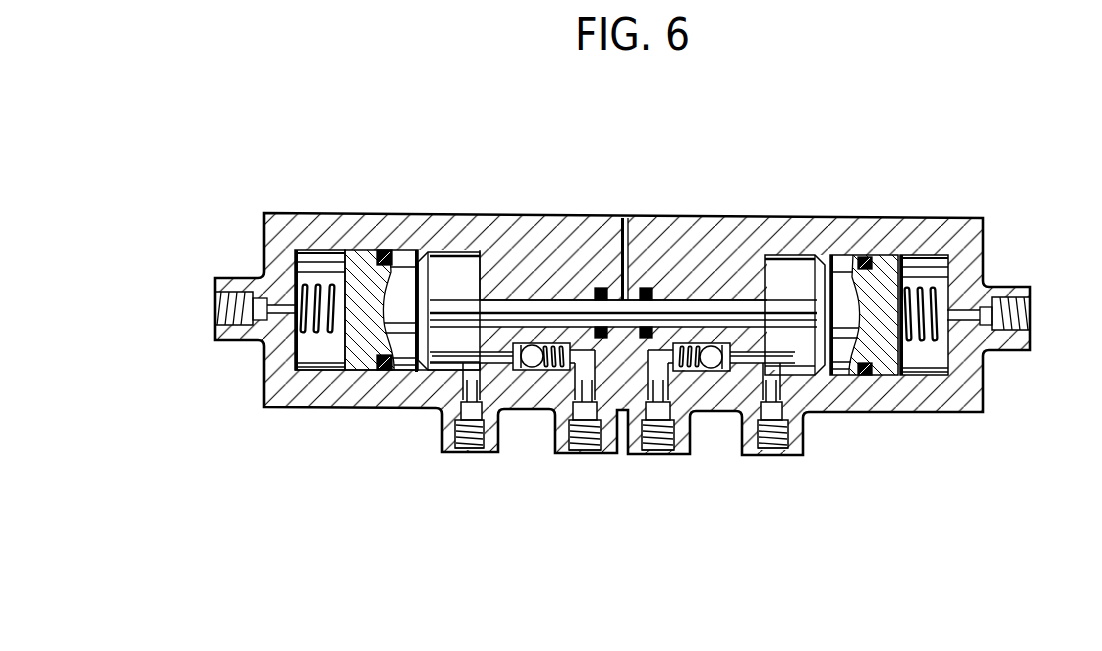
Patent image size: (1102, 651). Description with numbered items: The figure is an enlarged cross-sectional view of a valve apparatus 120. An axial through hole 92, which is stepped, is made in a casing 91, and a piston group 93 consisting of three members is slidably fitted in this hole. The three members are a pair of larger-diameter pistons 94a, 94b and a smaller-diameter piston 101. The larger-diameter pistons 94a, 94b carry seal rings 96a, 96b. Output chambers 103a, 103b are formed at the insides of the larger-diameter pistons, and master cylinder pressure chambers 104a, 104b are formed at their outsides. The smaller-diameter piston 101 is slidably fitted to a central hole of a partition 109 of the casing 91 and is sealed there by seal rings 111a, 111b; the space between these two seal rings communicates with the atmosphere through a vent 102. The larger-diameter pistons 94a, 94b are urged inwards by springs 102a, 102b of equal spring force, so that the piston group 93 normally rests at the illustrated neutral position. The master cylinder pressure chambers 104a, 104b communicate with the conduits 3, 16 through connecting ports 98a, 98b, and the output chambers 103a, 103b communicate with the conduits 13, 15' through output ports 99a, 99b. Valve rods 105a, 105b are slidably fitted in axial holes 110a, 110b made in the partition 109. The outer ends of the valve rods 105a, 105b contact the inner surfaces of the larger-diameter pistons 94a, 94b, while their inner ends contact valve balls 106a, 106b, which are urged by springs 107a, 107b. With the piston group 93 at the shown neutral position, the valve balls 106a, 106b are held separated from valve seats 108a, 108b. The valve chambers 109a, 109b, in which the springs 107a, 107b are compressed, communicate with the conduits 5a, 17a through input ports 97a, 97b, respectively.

The conduit 3 is at (200, 300).
The conduit 16 is at (1036, 310).
The casing 91 is at (407, 232).
The axial through hole 92 is at (405, 378).
The piston group 93 is at (672, 312).
The larger-diameter piston 94a is at (370, 345).
The larger-diameter piston 94b is at (880, 357).
The seal ring 96a is at (383, 253).
The seal ring 96b is at (865, 258).
The input port 97a is at (585, 457).
The input port 97b is at (657, 455).
The connecting port 98a is at (215, 308).
The connecting port 98b is at (1033, 314).
The output port 99a is at (470, 453).
The output port 99b is at (771, 453).
The smaller-diameter piston 101 is at (573, 308).
The vent 102 is at (625, 218).
The spring 102a is at (322, 345).
The spring 102b is at (922, 345).
The output chamber 103a is at (478, 290).
The output chamber 103b is at (813, 293).
The master cylinder pressure chamber 104a is at (315, 262).
The master cylinder pressure chamber 104b is at (925, 268).
The valve rod 105a is at (440, 362).
The valve rod 105b is at (797, 365).
The valve ball 106a is at (528, 367).
The valve ball 106b is at (708, 367).
The spring 107a is at (548, 350).
The spring 107b is at (693, 368).
The valve seat 108a is at (535, 368).
The valve seat 108b is at (728, 370).
The partition 109 is at (495, 245).
The valve chamber 109a is at (560, 372).
The valve chamber 109b is at (690, 370).
The axial hole 110a is at (500, 372).
The axial hole 110b is at (740, 365).
The seal ring 111a is at (600, 289).
The seal ring 111b is at (645, 289).
The valve apparatus 120 is at (773, 217).
The conduit 13 is at (467, 458).
The conduit 5a is at (583, 470).
The conduit 17a is at (665, 455).
The conduit 15' is at (780, 503).